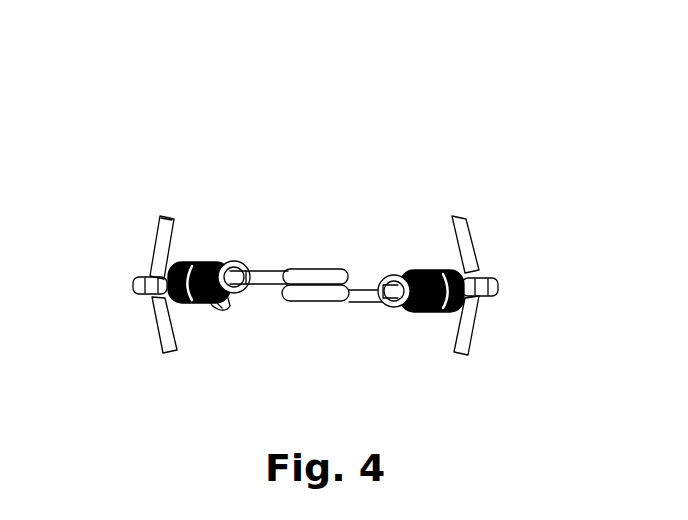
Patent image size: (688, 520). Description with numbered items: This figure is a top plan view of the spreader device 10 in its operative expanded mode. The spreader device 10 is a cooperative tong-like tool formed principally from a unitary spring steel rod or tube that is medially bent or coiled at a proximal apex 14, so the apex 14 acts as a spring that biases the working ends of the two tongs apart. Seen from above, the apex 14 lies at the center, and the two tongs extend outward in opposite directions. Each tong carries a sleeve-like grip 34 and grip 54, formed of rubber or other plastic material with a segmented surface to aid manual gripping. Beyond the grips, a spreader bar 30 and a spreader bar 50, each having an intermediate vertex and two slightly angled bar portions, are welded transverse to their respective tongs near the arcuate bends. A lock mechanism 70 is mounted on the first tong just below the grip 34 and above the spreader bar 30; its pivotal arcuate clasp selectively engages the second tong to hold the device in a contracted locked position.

The spreader device 10 is at (308, 221).
The proximal apex 14 is at (318, 306).
The spreader bar 30 is at (146, 262).
The grip 34 is at (212, 258).
The spreader bar 50 is at (484, 250).
The grip 54 is at (416, 272).
The lock mechanism 70 is at (226, 332).